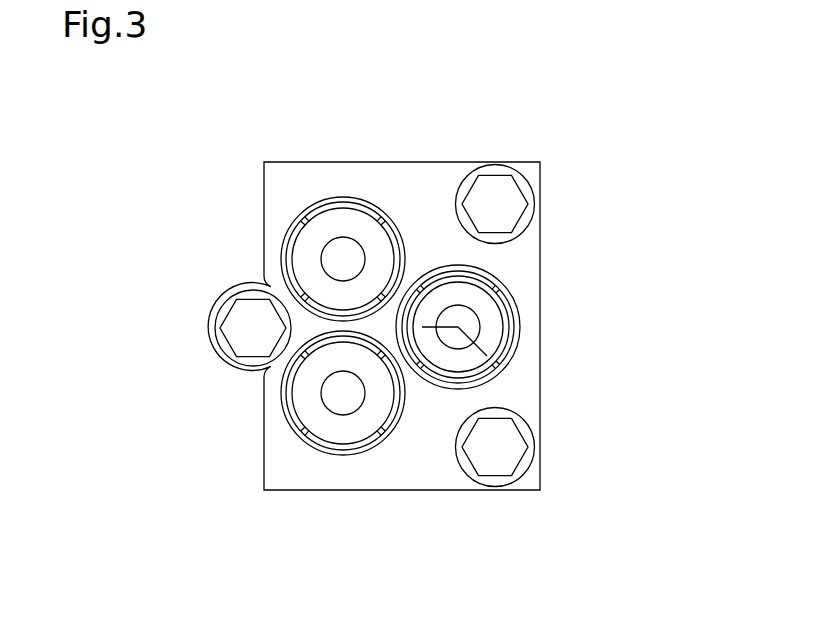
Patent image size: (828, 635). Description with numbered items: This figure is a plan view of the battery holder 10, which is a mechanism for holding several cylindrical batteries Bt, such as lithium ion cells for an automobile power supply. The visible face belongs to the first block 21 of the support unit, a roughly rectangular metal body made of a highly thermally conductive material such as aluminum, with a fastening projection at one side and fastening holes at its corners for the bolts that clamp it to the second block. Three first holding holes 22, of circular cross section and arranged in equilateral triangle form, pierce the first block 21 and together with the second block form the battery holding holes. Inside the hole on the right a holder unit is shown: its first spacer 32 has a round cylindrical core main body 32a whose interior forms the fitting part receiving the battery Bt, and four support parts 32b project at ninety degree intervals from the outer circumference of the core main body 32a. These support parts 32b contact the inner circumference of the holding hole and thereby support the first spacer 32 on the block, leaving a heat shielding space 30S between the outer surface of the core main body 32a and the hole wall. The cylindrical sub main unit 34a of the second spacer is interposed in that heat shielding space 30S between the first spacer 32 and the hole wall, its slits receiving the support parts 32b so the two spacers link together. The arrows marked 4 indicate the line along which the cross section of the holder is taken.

The battery holder 10 is at (188, 158).
The first block 21 is at (540, 185).
The first holding hole 22 is at (507, 367).
The first spacer 32 is at (647, 223).
The support part 32b is at (500, 283).
The core main body 32a is at (503, 293).
The sub main unit 34a is at (520, 320).
The heat shielding space 30S is at (520, 335).
The battery Bt is at (448, 363).
The section line 4- 4 is at (195, 327).